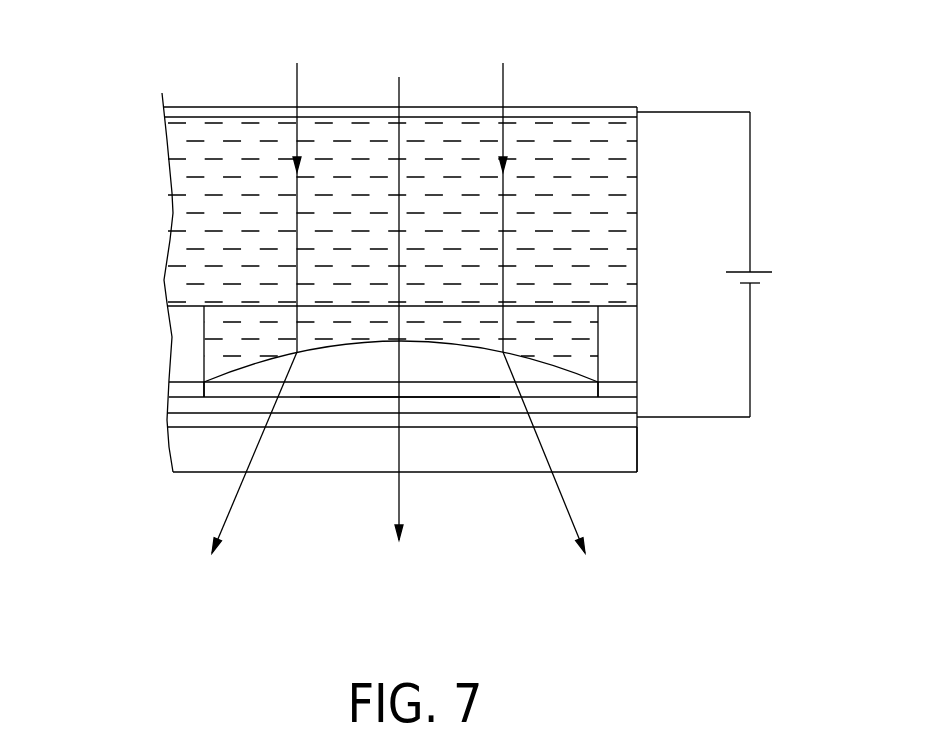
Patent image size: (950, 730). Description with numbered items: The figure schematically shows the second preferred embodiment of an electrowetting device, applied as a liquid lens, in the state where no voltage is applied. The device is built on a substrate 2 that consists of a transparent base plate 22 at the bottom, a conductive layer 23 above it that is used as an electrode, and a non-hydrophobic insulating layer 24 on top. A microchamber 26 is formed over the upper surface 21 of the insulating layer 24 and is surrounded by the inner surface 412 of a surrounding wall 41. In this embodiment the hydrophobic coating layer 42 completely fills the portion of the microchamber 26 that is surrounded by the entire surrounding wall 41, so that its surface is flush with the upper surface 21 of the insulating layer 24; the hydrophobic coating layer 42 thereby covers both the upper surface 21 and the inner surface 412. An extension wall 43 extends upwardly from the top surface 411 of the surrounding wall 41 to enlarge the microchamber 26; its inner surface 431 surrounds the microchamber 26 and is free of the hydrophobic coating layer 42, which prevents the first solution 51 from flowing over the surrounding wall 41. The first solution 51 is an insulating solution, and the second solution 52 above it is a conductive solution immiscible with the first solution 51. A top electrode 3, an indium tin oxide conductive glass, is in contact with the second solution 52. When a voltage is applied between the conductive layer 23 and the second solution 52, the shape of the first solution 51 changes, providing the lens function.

The substrate 2 is at (738, 441).
The top electrode 3 is at (233, 115).
The upper surface 21 is at (477, 396).
The base plate 22 is at (633, 457).
The conductive layer 23 is at (622, 418).
The insulating layer 24 is at (618, 406).
The microchamber 26 is at (318, 313).
The surrounding wall 41 is at (618, 392).
The top surface 411 is at (610, 383).
The inner surface 412 is at (205, 385).
The hydrophobic coating layer 42 is at (548, 390).
The extension wall 43 is at (617, 323).
The inner surface 431 is at (597, 323).
The first solution 51 is at (433, 353).
The second solution 52 is at (536, 193).